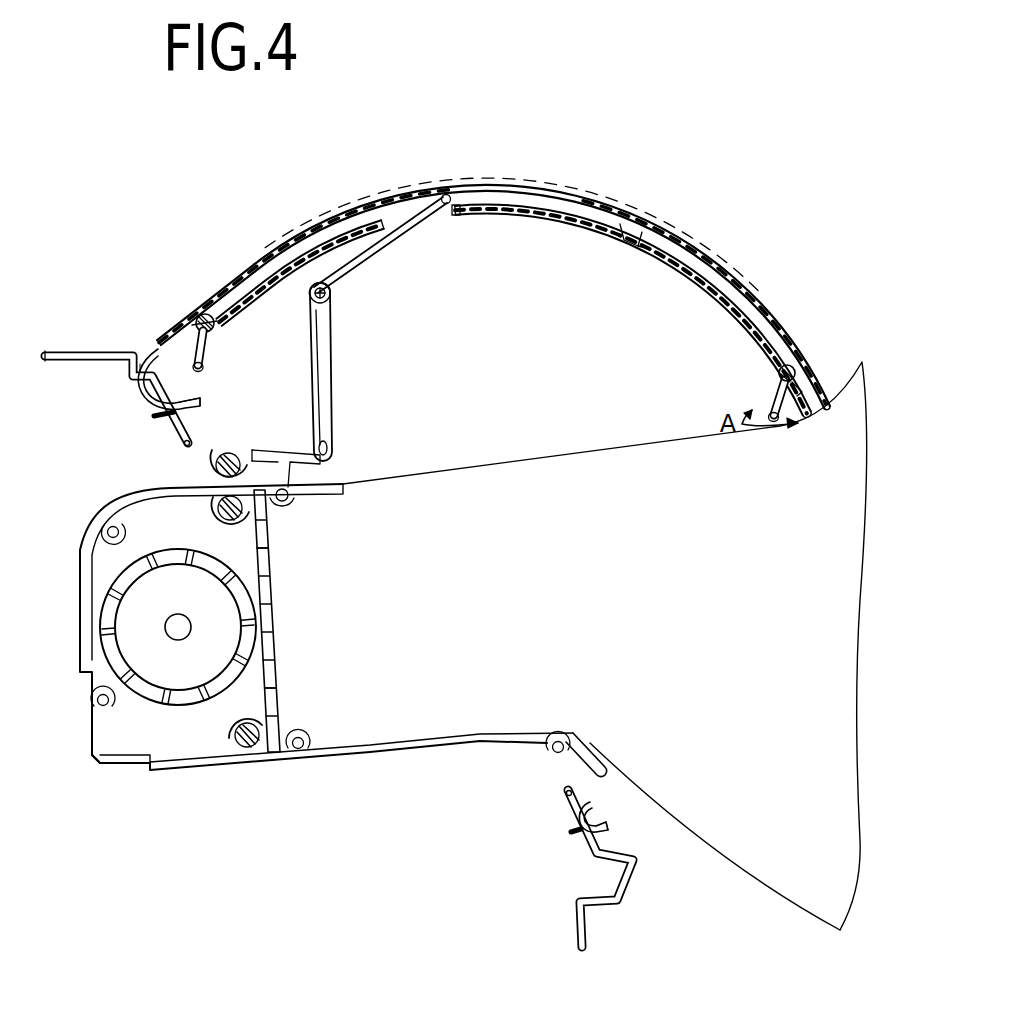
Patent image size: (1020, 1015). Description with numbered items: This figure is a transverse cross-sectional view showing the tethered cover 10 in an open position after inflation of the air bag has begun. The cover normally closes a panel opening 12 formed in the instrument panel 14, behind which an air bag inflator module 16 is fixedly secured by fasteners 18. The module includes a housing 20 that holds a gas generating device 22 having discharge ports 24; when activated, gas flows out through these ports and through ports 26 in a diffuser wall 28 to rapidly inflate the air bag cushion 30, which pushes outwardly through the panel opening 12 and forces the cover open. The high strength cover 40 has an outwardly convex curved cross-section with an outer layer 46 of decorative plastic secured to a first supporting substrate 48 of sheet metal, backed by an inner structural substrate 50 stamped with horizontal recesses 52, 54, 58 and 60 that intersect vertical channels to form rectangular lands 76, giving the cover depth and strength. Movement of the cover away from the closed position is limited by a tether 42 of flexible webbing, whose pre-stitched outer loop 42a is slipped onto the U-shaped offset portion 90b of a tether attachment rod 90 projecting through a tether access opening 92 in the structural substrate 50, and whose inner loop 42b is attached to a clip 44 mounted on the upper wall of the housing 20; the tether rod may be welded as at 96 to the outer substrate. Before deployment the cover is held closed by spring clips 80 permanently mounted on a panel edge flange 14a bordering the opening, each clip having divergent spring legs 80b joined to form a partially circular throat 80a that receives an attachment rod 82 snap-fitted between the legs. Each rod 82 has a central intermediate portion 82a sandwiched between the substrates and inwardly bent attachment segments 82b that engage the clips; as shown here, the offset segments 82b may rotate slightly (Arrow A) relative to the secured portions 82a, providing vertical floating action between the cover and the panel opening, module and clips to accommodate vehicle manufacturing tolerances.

The tethered cover 10 is at (672, 214).
The panel opening 12 is at (180, 445).
The instrument panel 14 is at (80, 352).
The panel edge flange 14a is at (158, 408).
The air bag inflator module 16 is at (178, 770).
The fasteners 18 is at (212, 463).
The housing 20 is at (133, 762).
The gas generating device 22 is at (106, 650).
The discharge ports 24 is at (197, 552).
The ports 26 is at (268, 565).
The diffuser wall 28 is at (274, 630).
The air bag cushion 30 is at (618, 628).
The cover 40 is at (727, 268).
The tethers 42 is at (336, 377).
The pre-stitched loop 42a is at (340, 308).
The loop 42b is at (315, 440).
The clip 44 is at (290, 452).
The outer layer 46 is at (522, 182).
The first supporting substrate 48 is at (622, 225).
The inner structural substrate 50 is at (564, 228).
The recess 52 is at (209, 314).
The recess 54 is at (296, 280).
The recess 58 is at (644, 244).
The recess 60 is at (793, 364).
The lands 76 is at (254, 278).
The spring clips 80 is at (170, 380).
The throat 80a is at (206, 385).
The spring legs 80b is at (177, 398).
The attachment rod 82 is at (216, 345).
The intermediate portion 82a is at (205, 320).
The attachment segments 82b is at (212, 365).
The tether attachment rod 90 is at (415, 243).
The U-shaped offset portion 90b is at (330, 293).
The tether access openings 92 is at (456, 218).
The weld 96 is at (446, 194).